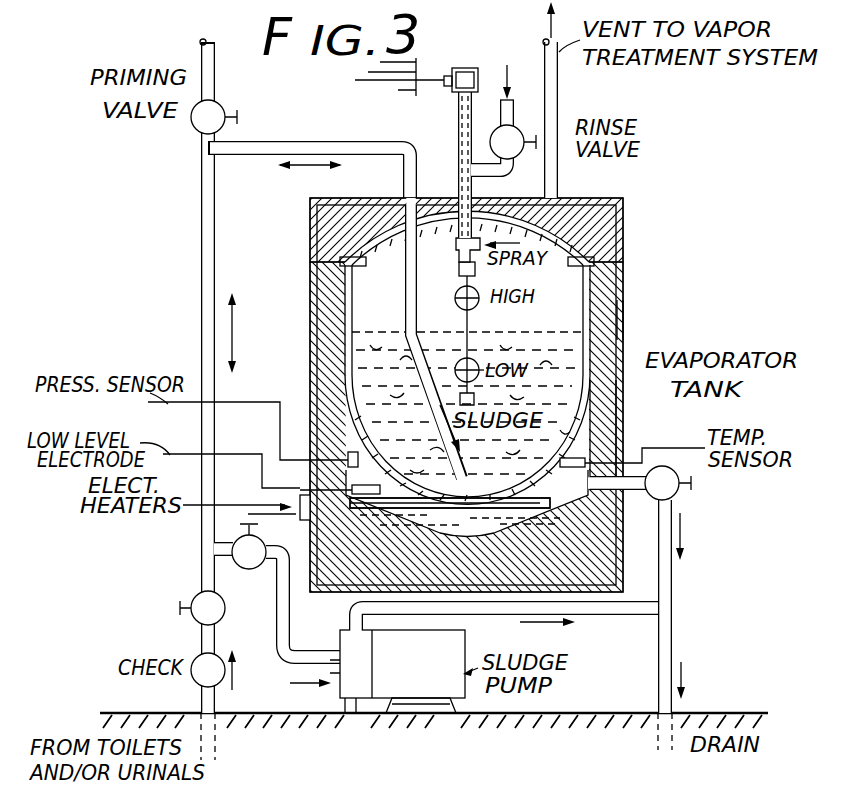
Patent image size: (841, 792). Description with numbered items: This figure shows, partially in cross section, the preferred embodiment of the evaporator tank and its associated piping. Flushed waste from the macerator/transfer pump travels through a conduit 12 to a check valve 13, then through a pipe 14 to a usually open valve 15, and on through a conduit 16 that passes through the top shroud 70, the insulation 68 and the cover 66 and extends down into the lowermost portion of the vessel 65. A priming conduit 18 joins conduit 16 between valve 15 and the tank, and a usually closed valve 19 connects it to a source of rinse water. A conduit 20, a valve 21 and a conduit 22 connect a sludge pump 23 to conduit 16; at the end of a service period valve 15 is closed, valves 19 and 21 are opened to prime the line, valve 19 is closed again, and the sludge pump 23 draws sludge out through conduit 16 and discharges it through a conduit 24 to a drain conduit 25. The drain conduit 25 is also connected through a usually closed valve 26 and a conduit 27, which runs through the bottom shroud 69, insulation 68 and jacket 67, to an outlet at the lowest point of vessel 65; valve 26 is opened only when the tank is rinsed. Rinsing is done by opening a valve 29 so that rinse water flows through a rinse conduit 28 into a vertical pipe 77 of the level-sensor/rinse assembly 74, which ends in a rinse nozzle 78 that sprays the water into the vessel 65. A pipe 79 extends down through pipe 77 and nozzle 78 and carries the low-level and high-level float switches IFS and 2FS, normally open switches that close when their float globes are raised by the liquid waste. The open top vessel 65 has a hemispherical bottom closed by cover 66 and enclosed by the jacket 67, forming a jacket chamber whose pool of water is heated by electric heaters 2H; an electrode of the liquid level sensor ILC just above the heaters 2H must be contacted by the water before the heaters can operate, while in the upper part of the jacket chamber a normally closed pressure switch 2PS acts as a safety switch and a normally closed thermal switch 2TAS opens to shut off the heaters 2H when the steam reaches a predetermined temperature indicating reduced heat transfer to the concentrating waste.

The conduit 12 is at (200, 696).
The check valve 13 is at (236, 688).
The pipe 14 is at (200, 635).
The valve 15 is at (195, 598).
The conduit 16 is at (200, 237).
The priming conduit 18 is at (230, 121).
The valve 19 is at (192, 125).
The conduit 20 is at (215, 545).
The valve 21 is at (249, 570).
The conduit 22 is at (278, 623).
The sludge pump 23 is at (345, 714).
The conduit 24 is at (610, 616).
The drain conduit 25 is at (676, 603).
The valve 26 is at (676, 493).
The conduit 27 is at (648, 473).
The rinse conduit 28 is at (495, 178).
The valve 29 is at (524, 133).
The vessel 65 is at (617, 297).
The cover 66 is at (593, 240).
The jacket 67 is at (597, 438).
The insulation 68 is at (600, 320).
The bottom shroud 69 is at (622, 283).
The top shroud 70 is at (598, 198).
The level-sensor/rinse assembly 74 is at (457, 190).
The vertical pipe 77 is at (458, 182).
The rinse nozzle 78 is at (456, 246).
The pipe 79 is at (462, 271).
The thermal switch 2TAS is at (615, 455).
The electric heaters 2H is at (560, 506).
The pressure switch 2PS is at (312, 407).
The high-level sensor switch 2FS is at (479, 300).
The low-level sensor switch IFS is at (458, 368).
The liquid level sensor ILC is at (352, 478).